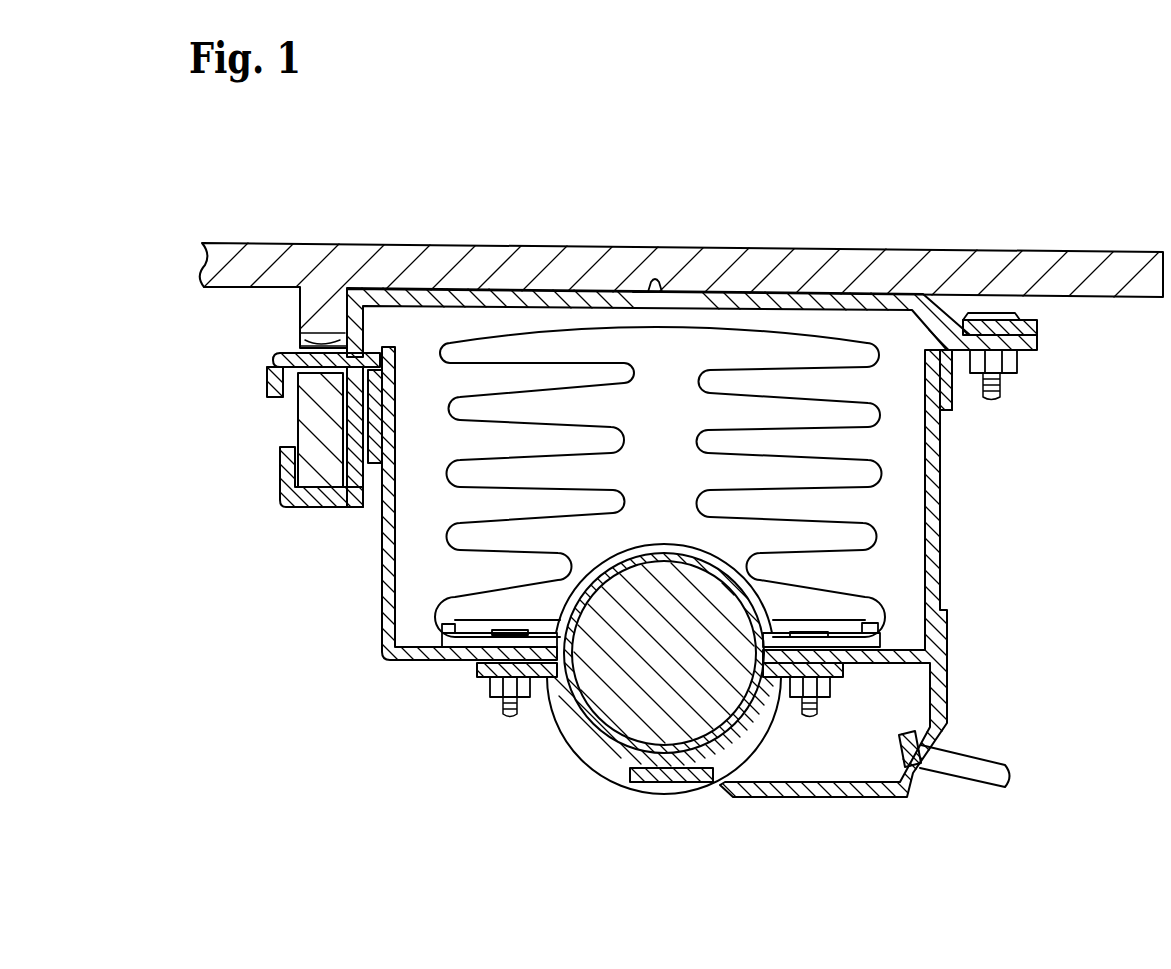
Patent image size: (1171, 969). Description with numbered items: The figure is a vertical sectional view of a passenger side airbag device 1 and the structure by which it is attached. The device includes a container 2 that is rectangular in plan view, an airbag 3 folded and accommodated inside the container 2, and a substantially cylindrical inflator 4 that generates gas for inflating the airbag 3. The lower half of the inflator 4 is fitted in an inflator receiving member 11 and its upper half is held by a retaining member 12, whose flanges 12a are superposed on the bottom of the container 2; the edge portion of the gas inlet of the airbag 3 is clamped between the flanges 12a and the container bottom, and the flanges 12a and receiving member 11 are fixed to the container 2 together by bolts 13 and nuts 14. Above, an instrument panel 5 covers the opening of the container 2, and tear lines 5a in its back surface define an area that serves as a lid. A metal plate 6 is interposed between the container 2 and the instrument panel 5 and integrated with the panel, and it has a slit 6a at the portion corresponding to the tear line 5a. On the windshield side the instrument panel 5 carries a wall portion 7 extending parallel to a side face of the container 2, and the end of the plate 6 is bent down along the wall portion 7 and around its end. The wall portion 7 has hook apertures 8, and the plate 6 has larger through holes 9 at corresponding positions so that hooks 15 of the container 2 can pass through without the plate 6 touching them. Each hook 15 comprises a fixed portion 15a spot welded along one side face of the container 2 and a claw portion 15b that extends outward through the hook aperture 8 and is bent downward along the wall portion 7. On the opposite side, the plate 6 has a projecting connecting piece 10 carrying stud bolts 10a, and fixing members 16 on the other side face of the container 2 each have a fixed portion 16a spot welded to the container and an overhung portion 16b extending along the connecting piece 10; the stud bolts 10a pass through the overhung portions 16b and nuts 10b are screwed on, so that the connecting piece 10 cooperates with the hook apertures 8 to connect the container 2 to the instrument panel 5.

The passenger side airbag device 1 is at (940, 130).
The container 2 is at (940, 580).
The airbag 3 is at (707, 333).
The inflator 4 is at (624, 740).
The instrument panel 5 is at (255, 262).
The tear lines 5a is at (677, 275).
The plate 6 is at (850, 300).
The slit 6a is at (650, 300).
The wall portion 7 is at (312, 416).
The hook apertures 8 is at (300, 335).
The through holes 9 is at (340, 347).
The connecting piece 10 is at (1038, 328).
The stud bolts 10a is at (1010, 400).
The nuts 10b is at (1000, 390).
The inflator receiving member 11 is at (578, 732).
The retaining member 12 is at (655, 542).
The flanges 12a is at (483, 633).
The bolts 13 is at (505, 718).
The nuts 14 is at (490, 690).
The hooks 15 is at (375, 348).
The fixed portion 15a is at (367, 500).
The claw portion 15b is at (273, 382).
The fixing members 16 is at (955, 400).
The fixed portion 16a is at (947, 414).
The overhung portion 16b is at (1036, 342).